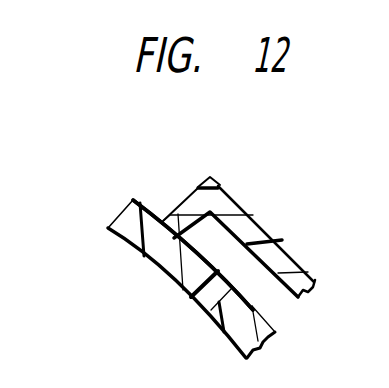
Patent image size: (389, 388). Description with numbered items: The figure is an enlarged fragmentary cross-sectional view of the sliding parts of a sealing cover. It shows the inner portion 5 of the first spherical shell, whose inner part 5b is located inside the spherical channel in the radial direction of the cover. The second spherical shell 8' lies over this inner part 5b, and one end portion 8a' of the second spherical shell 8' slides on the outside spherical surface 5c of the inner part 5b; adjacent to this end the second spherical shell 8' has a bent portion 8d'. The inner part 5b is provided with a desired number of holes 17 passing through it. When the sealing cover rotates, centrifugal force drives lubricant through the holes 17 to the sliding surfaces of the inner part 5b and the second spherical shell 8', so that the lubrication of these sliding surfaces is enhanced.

The inner portion 5 is at (128, 215).
The inner part 5b is at (165, 260).
The outside spherical surface 5c is at (252, 306).
The holes 17 is at (201, 303).
The second spherical shell 8' is at (244, 235).
The end portion 8a' is at (228, 158).
The bent portion 8d' is at (202, 182).